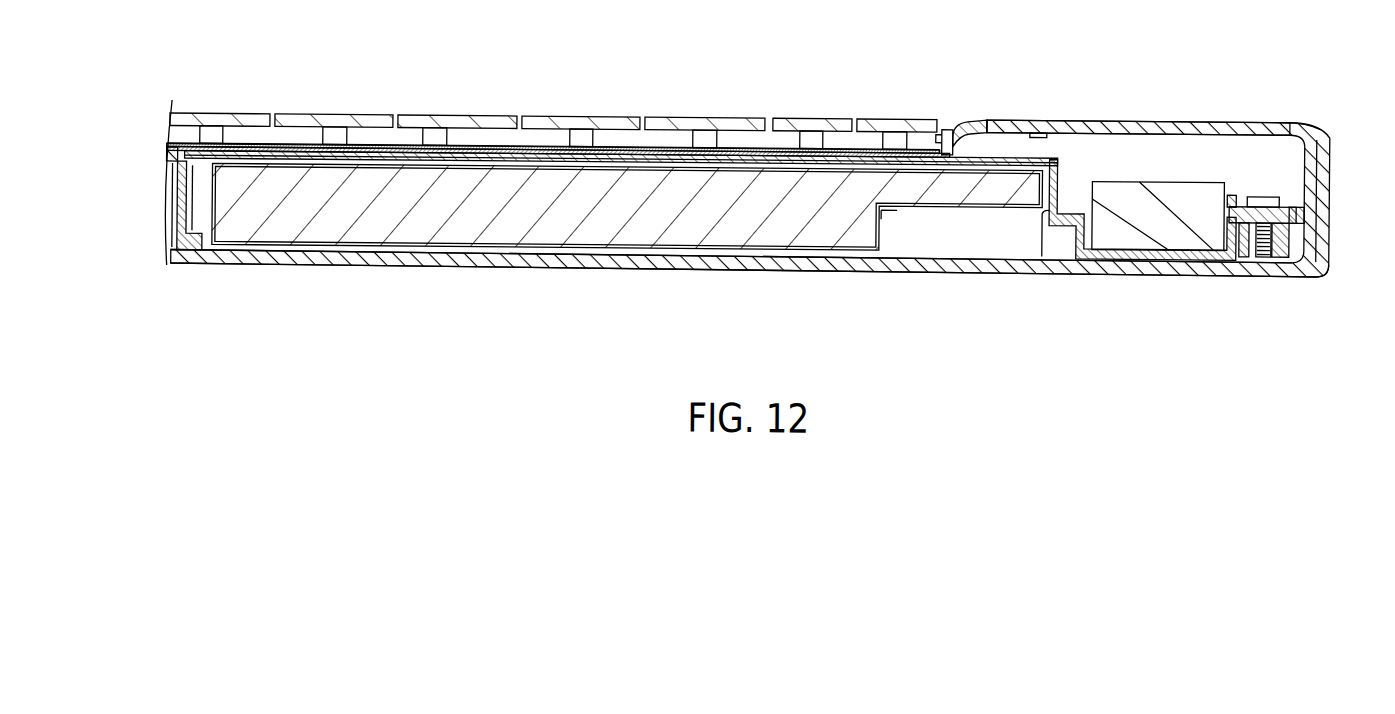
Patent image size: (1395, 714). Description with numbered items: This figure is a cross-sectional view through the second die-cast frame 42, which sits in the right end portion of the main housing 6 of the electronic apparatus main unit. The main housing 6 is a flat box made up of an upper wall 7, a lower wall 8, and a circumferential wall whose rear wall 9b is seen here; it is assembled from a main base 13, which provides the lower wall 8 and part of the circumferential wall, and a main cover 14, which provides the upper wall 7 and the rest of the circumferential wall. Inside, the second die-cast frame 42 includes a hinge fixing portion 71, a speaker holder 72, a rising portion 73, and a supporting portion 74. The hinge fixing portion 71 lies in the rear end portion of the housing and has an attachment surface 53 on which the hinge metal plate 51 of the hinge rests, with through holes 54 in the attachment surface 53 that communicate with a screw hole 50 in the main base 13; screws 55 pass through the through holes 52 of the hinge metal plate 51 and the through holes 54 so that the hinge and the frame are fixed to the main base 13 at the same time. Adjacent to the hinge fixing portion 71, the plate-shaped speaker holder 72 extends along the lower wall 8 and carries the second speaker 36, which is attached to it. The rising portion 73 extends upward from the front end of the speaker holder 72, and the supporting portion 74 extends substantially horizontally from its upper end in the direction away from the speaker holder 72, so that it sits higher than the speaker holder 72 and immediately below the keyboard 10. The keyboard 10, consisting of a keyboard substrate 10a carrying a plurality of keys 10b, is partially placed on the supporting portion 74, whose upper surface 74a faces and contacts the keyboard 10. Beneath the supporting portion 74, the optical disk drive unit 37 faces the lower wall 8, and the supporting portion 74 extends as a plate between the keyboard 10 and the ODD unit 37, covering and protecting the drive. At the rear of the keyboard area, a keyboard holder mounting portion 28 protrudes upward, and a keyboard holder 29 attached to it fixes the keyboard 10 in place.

The main housing 6 is at (1338, 115).
The upper wall 7 is at (1058, 114).
The lower wall 8 is at (745, 259).
The rear wall 9b is at (1331, 198).
The keyboard 10 is at (554, 85).
The keyboard substrate 10a is at (279, 126).
The keys 10b is at (548, 114).
The main base 13 is at (1330, 278).
The main cover 14 is at (1286, 105).
The keyboard holder mounting portion 28 is at (948, 122).
The keyboard holder 29 is at (974, 115).
The second speaker 36 is at (1156, 236).
The optical disk drive (ODD) unit 37 is at (636, 226).
The second die-cast frame 42 is at (812, 137).
The screw hole 50 is at (1254, 255).
The hinge metal plate 51 is at (1235, 186).
The through holes 52 is at (1292, 197).
The attachment surface 53 is at (1230, 198).
The through holes 54 is at (1248, 253).
The screws 55 is at (1262, 227).
The hinge fixing portion 71 is at (1290, 258).
The speaker holder 72 is at (1128, 253).
The rising portion 73 is at (1044, 252).
The supporting portion 74 is at (471, 136).
The surface 74a is at (412, 126).